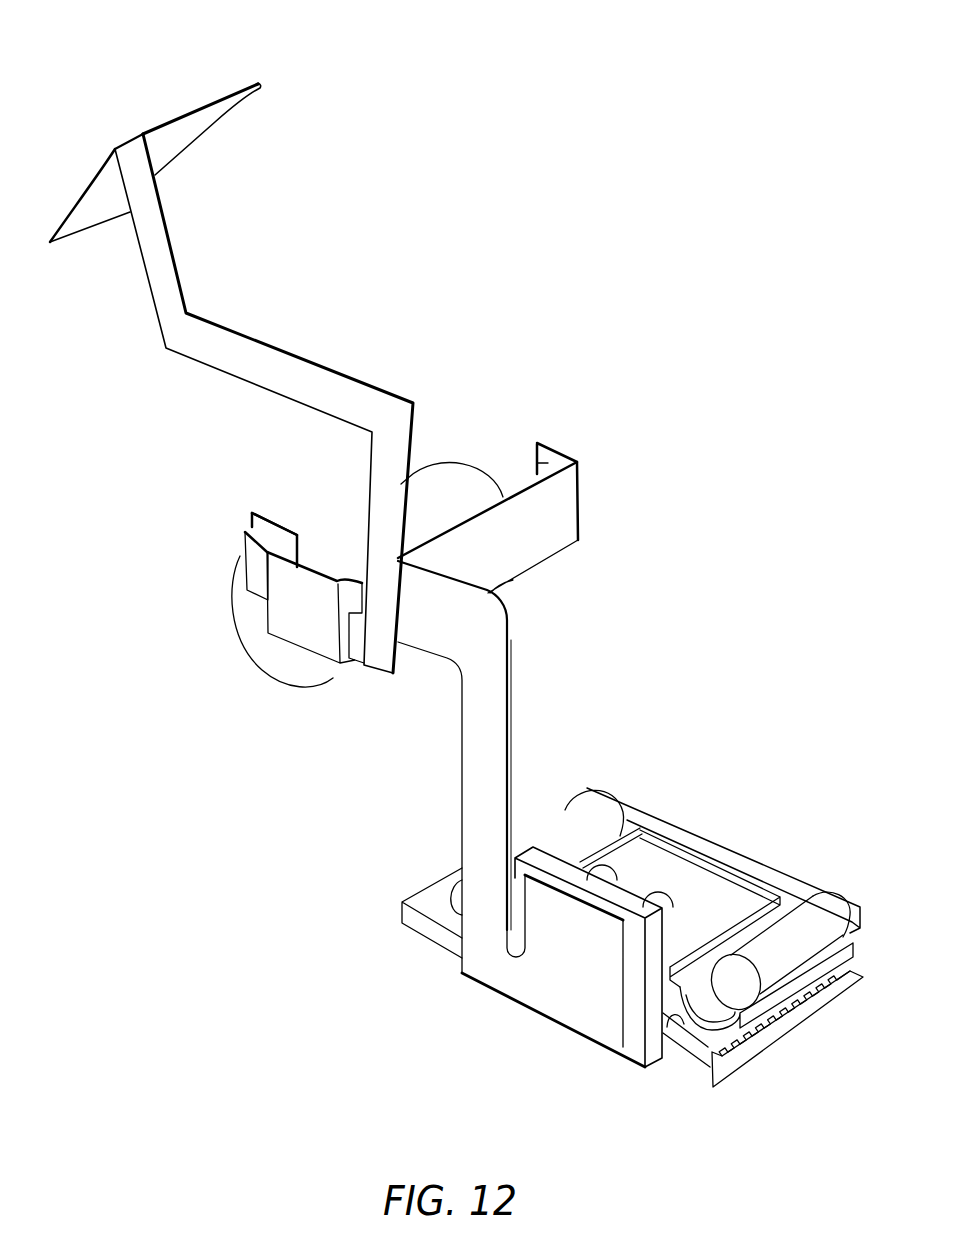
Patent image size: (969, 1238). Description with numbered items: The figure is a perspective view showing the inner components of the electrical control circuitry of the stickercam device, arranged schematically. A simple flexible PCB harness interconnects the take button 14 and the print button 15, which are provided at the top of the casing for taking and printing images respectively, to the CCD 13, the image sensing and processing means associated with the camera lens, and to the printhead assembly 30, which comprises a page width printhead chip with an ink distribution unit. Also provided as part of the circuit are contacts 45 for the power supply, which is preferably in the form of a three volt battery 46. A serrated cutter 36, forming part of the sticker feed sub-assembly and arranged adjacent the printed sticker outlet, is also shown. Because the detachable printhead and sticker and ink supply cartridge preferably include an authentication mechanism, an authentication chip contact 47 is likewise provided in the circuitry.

The CCD 13 is at (250, 554).
The take button 14 is at (127, 123).
The print button 15 is at (228, 80).
The printer mechanism 30 is at (748, 814).
The serrated cutter 36 is at (743, 1063).
The contacts 45 is at (273, 518).
The battery 46 is at (445, 470).
The authentication chip contact 47 is at (582, 502).